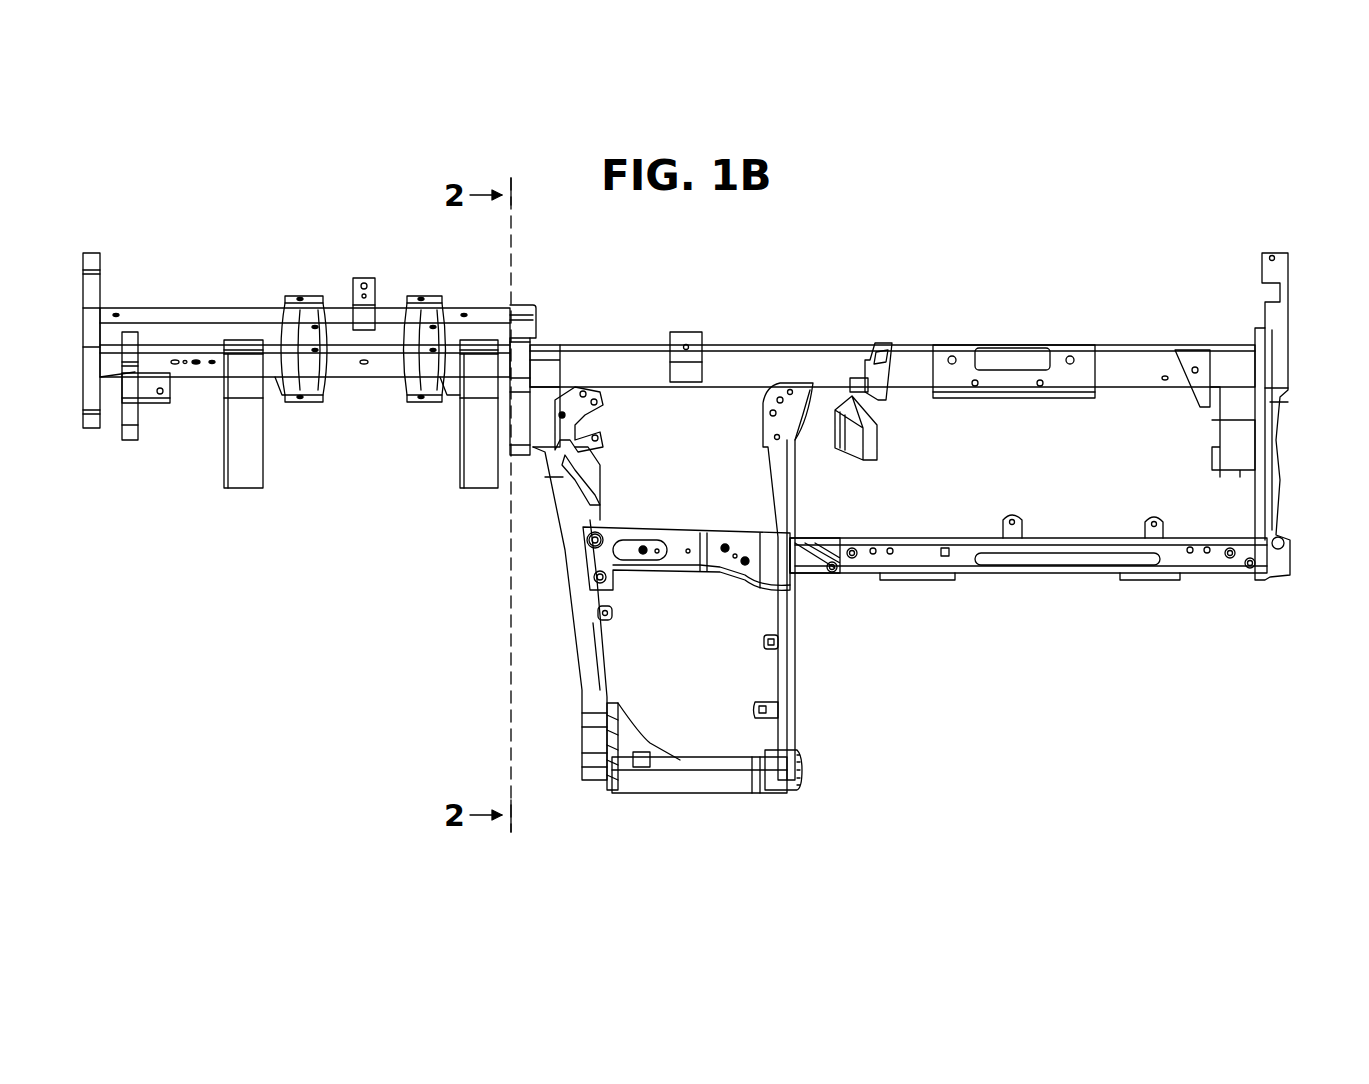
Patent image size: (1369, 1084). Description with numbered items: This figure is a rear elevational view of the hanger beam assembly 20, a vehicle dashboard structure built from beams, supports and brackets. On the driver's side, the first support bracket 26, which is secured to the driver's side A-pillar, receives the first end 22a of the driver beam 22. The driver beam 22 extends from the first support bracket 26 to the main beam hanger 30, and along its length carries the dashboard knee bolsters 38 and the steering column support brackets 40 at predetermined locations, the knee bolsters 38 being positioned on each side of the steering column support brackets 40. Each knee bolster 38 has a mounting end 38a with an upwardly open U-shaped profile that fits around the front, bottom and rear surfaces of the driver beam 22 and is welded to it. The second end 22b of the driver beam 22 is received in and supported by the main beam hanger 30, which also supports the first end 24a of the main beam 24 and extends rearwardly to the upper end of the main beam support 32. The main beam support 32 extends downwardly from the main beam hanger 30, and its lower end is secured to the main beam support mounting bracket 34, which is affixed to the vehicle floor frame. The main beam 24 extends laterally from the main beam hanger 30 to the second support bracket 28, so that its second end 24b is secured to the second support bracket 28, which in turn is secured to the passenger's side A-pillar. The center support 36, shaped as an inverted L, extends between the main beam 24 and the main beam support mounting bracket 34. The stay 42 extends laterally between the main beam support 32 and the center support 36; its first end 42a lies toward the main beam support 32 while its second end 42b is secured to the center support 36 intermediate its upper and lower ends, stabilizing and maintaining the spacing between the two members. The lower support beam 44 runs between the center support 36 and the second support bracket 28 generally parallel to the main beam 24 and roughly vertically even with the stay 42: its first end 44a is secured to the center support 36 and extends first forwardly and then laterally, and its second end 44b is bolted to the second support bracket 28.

The hanger beam assembly 20 is at (905, 243).
The driver beam 22 is at (215, 307).
The first end of the driver beam 22a is at (108, 307).
The second end of the driver beam 22b is at (516, 305).
The main beam 24 is at (775, 345).
The first end of the main beam 24a is at (565, 345).
The second end of the main beam 24b is at (1245, 345).
The first support bracket 26 is at (95, 253).
The second support bracket 28 is at (1285, 257).
The main beam hanger 30 is at (538, 345).
The main beam support 32 is at (575, 655).
The main beam support mounting bracket 34 is at (690, 795).
The center support 36 is at (795, 690).
The dashboard knee bolsters 38 is at (248, 490).
The mounting end 38a is at (450, 399).
The steering column support brackets 40 is at (300, 296).
The stay 42 is at (650, 528).
The first end of the stay 42a is at (605, 520).
The second end of the stay 42b is at (763, 520).
The lower support beam 44 is at (985, 580).
The first end of the lower support beam 44a is at (845, 582).
The second end of the lower support beam 44b is at (1230, 582).